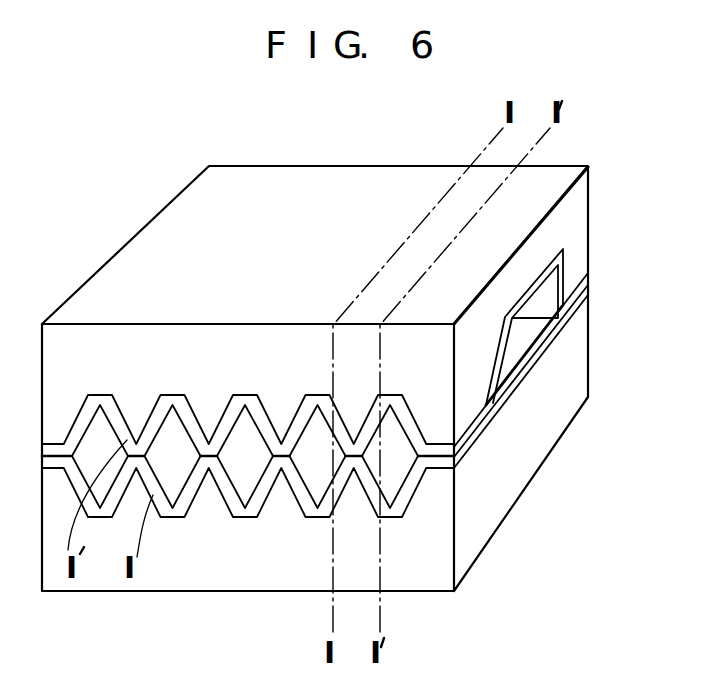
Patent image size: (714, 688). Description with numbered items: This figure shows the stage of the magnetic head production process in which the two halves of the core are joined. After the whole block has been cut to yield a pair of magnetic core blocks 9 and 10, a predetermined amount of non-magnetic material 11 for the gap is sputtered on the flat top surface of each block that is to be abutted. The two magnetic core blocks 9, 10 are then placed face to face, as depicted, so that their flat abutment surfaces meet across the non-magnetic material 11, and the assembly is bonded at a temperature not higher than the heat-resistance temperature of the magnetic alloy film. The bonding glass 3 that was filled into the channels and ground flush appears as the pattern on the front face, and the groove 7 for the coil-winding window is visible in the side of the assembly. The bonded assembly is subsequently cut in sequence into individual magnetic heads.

The bonding glass 3 is at (237, 473).
The groove 7 is at (533, 318).
The magnetic core block 9 is at (573, 361).
The magnetic core block 10 is at (569, 229).
The non-magnetic material 11 is at (478, 430).